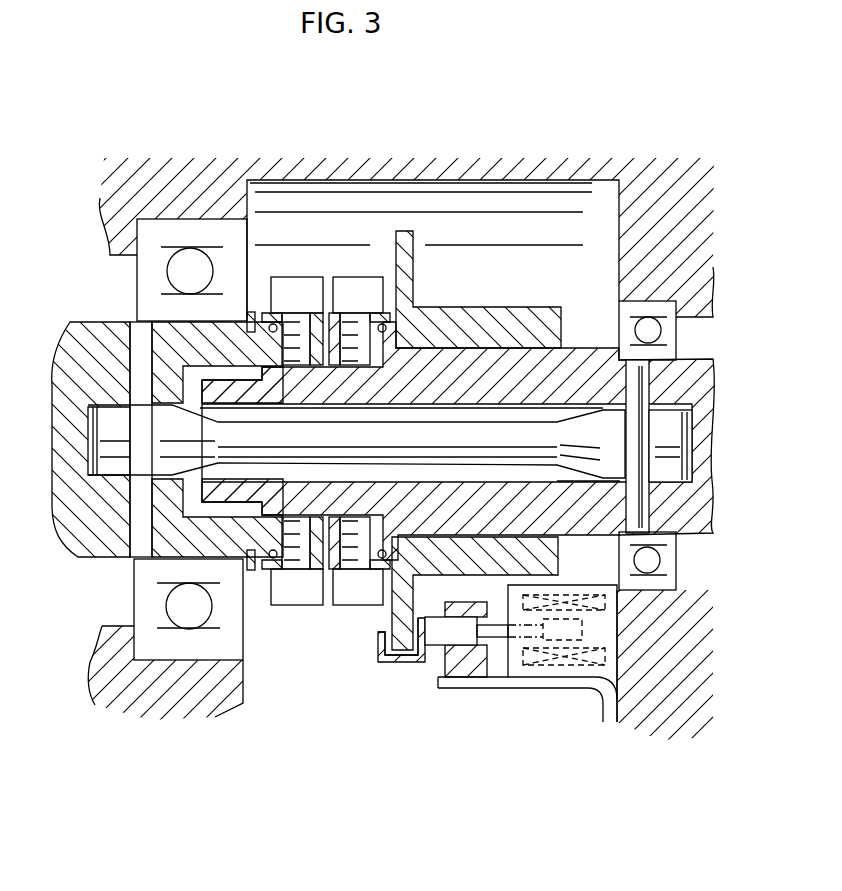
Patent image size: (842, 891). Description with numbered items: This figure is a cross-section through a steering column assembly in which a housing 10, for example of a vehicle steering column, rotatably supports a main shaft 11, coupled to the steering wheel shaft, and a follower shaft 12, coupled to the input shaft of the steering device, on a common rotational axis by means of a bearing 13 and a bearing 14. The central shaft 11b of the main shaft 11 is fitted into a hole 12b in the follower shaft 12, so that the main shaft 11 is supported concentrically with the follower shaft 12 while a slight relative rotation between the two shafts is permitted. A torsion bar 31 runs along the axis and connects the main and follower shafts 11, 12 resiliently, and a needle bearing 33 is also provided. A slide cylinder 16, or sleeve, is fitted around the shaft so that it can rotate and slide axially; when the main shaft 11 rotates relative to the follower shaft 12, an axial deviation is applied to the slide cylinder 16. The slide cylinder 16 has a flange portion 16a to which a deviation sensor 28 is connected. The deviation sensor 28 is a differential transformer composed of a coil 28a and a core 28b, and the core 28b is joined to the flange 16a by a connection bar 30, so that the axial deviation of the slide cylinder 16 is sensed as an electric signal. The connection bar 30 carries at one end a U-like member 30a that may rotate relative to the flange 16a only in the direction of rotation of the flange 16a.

The housing 10 is at (548, 172).
The main shaft 11 is at (702, 392).
The central shaft 11b is at (232, 382).
The follower shaft 12 is at (78, 530).
The hole 12b is at (133, 327).
The bearing 13 is at (165, 650).
The bearing 14 is at (668, 584).
The slide cylinder 16 is at (485, 306).
The flange portion 16a is at (400, 642).
The deviation sensor 28 is at (548, 672).
The coil 28a is at (530, 660).
The core 28b is at (582, 655).
The connection bar 30 is at (437, 637).
The U-like member 30a is at (379, 637).
The torsion bar 31 is at (501, 433).
The needle bearing 33 is at (232, 515).